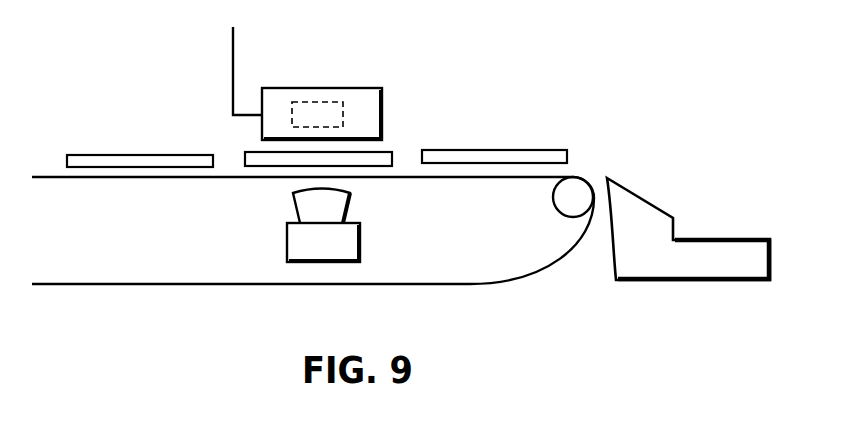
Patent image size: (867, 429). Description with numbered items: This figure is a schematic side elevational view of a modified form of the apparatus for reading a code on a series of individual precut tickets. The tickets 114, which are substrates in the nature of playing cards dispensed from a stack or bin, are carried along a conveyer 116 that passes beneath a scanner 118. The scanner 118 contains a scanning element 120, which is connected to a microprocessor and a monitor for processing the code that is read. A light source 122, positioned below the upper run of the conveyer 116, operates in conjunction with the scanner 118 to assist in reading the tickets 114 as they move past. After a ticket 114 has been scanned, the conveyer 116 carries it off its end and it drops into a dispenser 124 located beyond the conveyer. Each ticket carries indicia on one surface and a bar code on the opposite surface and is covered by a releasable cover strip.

The ticket 114 is at (160, 153).
The conveyer 116 is at (228, 180).
The scanner 118 is at (355, 88).
The scanning element 120 is at (345, 122).
The light source 122 is at (362, 241).
The dispenser 124 is at (722, 240).